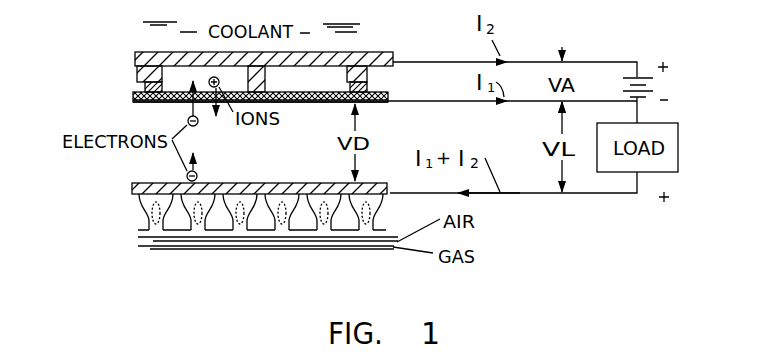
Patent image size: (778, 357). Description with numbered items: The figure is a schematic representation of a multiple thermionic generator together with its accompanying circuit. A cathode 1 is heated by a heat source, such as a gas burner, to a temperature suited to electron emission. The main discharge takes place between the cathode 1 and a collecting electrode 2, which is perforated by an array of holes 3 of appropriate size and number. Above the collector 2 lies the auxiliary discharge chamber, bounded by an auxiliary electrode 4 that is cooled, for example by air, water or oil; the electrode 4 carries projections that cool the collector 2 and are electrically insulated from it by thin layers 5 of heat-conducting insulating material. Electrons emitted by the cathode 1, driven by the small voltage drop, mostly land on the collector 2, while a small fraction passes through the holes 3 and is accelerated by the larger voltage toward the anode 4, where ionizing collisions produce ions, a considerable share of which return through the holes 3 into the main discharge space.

The cathode 1 is at (272, 183).
The collecting electrode 2 is at (135, 97).
The holes 3 is at (333, 101).
The auxiliary electrode 4 is at (136, 60).
The thin layers of electrical insulating material 5 is at (150, 90).